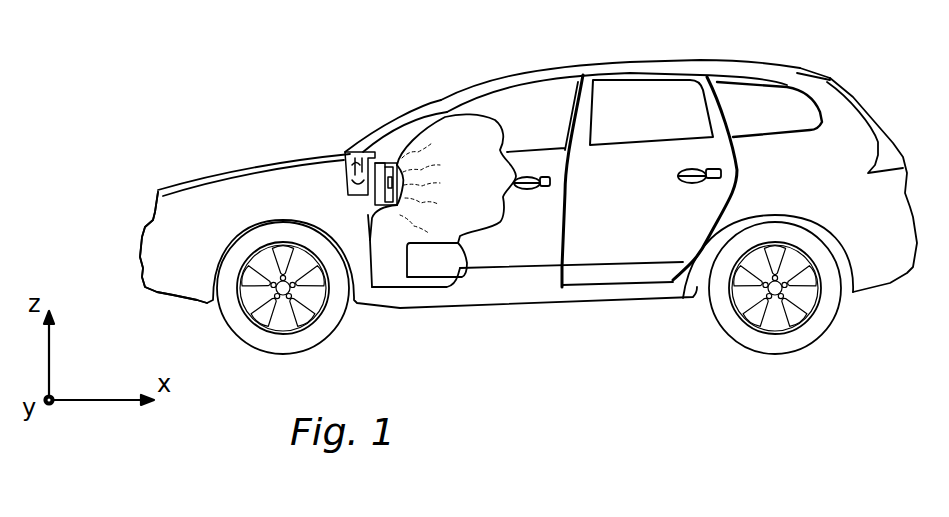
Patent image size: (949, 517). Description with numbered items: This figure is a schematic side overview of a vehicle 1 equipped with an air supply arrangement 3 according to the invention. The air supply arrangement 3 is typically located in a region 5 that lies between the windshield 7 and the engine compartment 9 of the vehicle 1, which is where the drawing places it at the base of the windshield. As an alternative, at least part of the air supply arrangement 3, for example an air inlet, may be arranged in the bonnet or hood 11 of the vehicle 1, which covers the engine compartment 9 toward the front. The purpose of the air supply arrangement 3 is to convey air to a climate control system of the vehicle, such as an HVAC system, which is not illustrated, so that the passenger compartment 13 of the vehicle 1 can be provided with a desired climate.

The vehicle 1 is at (255, 66).
The air supply arrangement 3 is at (456, 178).
The region 5 is at (353, 136).
The windshield 7 is at (441, 99).
The engine compartment 9 is at (218, 197).
The bonnet or hood 11 is at (248, 167).
The passenger compartment 13 is at (444, 134).